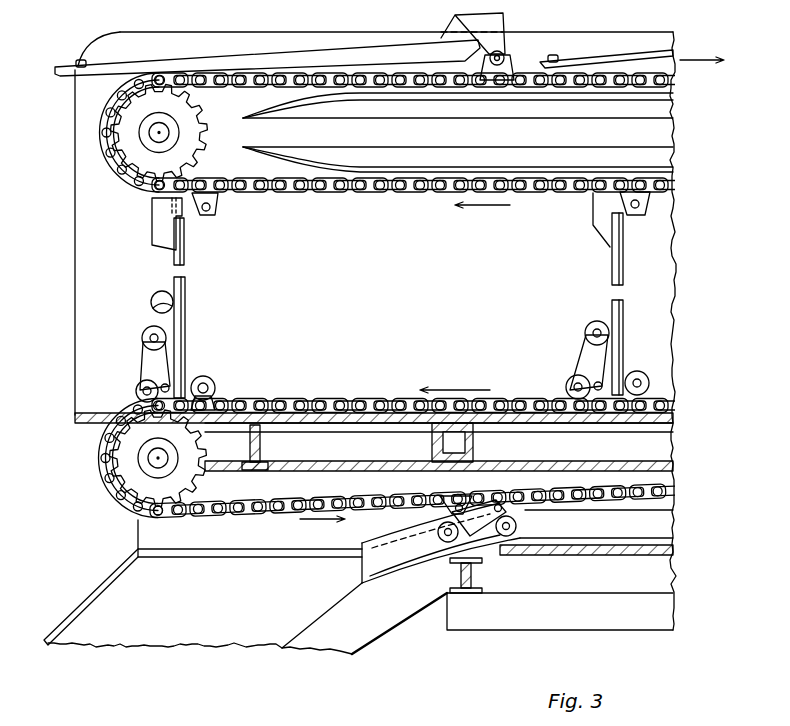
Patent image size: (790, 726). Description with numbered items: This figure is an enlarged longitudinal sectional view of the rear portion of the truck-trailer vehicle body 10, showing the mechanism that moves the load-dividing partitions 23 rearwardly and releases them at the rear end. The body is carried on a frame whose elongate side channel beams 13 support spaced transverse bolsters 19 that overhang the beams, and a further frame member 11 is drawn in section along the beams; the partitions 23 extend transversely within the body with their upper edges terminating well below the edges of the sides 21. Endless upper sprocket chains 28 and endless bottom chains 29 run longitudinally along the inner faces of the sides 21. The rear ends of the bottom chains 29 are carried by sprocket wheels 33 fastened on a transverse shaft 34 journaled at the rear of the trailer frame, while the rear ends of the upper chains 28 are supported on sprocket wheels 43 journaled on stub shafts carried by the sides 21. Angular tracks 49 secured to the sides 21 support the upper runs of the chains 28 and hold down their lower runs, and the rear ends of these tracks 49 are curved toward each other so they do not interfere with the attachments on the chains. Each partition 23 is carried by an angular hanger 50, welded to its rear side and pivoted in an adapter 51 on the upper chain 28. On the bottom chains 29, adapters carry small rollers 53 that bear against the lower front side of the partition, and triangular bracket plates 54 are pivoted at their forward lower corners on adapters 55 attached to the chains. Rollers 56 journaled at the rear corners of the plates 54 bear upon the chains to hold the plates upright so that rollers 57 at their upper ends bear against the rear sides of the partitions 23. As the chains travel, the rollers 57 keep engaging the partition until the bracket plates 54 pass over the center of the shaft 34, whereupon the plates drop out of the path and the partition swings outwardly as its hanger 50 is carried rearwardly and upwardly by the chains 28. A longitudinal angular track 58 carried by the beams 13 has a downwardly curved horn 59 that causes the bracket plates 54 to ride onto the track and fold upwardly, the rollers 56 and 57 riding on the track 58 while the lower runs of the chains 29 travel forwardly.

The vehicle body 10 is at (673, 318).
The upper support plate 11 is at (673, 430).
The side channel beams 13 is at (673, 470).
The transverse bolsters 19 is at (474, 438).
The sides 21 is at (75, 264).
The partitions 23 is at (151, 306).
The upper sprocket chains 28 is at (400, 196).
The bottom chains 29 is at (288, 400).
The sprocket wheels 33 is at (112, 500).
The transverse shaft 34 is at (168, 462).
The sprocket wheels 43 is at (128, 152).
The tracks 49 is at (673, 100).
The angular hangers 50 is at (593, 228).
The adapters 51 is at (640, 204).
The small rollers 53 is at (640, 372).
The triangular bracket plates 54 is at (144, 366).
The adapters 55 is at (604, 418).
The rollers 56 is at (570, 380).
The rollers 57 is at (144, 340).
The longitudinal angular track 58 is at (610, 546).
The downwardly curved horn 59 is at (402, 580).